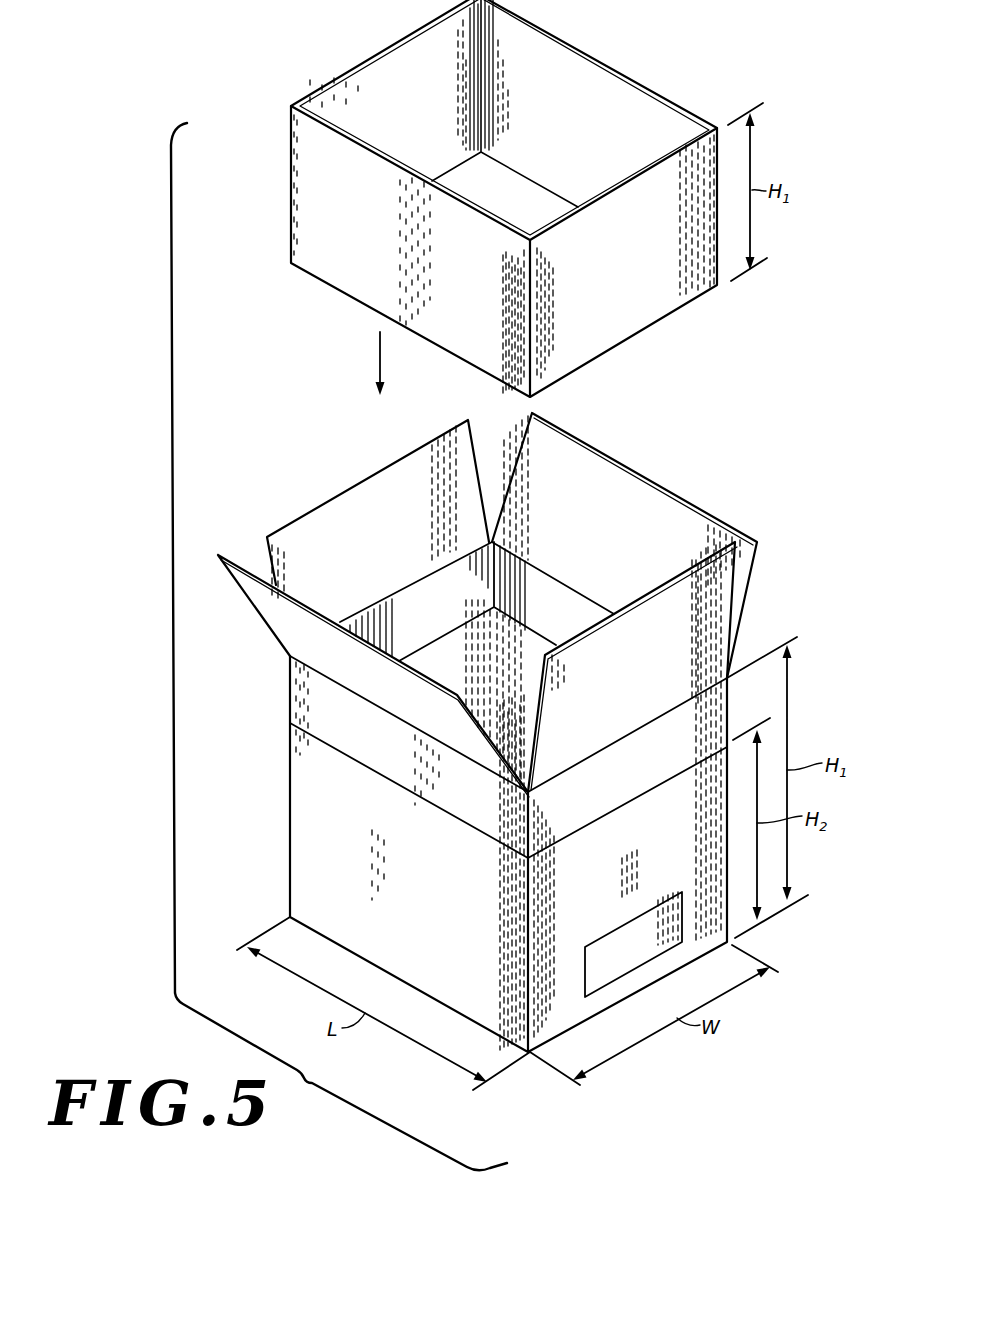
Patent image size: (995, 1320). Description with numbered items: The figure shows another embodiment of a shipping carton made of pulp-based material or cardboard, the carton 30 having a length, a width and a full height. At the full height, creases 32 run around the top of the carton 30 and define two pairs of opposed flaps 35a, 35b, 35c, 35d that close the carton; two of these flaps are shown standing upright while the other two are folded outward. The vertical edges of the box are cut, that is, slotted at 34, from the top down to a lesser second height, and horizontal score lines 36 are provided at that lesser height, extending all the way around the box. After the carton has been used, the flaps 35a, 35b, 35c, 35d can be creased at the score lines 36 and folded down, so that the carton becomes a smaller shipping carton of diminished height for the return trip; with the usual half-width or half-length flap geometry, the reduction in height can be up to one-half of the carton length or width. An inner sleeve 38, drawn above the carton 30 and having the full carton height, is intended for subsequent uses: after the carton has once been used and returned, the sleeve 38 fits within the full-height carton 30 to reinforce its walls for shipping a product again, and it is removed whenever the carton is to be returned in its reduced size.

The carton 30 is at (264, 880).
The creases 32 is at (337, 683).
The slots 34 is at (727, 711).
The horizontal score lines 36 is at (551, 640).
The flap 35a is at (360, 669).
The flap 35b is at (648, 674).
The flap 35c is at (625, 534).
The flap 35d is at (391, 549).
The inner sleeve 38 is at (633, 269).